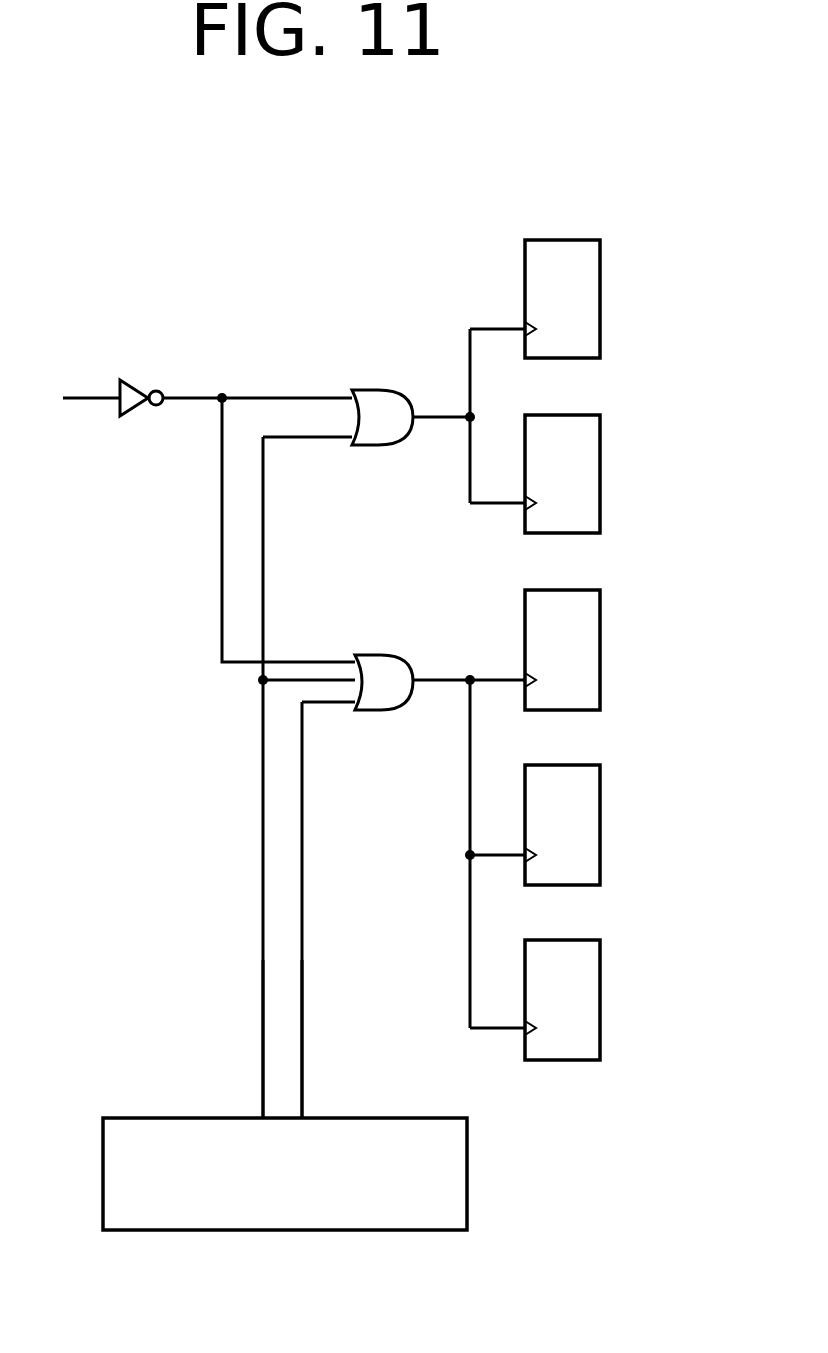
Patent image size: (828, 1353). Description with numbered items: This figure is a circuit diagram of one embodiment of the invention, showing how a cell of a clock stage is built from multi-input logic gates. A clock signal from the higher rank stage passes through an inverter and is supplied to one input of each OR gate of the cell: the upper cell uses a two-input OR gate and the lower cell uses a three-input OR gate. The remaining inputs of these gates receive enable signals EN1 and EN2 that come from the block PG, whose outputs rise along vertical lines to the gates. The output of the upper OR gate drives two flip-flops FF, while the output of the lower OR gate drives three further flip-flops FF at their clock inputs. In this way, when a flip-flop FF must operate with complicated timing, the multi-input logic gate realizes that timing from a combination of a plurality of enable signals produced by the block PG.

The flip-flop FF is at (646, 296).
The element PG is at (285, 1174).
The first enable signal EN1 is at (257, 992).
The second enable signal EN2 is at (307, 1002).